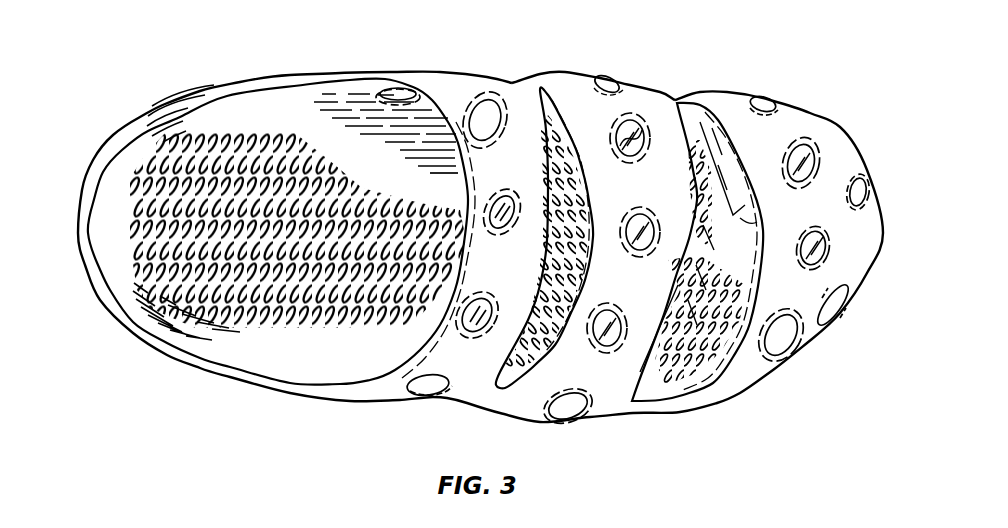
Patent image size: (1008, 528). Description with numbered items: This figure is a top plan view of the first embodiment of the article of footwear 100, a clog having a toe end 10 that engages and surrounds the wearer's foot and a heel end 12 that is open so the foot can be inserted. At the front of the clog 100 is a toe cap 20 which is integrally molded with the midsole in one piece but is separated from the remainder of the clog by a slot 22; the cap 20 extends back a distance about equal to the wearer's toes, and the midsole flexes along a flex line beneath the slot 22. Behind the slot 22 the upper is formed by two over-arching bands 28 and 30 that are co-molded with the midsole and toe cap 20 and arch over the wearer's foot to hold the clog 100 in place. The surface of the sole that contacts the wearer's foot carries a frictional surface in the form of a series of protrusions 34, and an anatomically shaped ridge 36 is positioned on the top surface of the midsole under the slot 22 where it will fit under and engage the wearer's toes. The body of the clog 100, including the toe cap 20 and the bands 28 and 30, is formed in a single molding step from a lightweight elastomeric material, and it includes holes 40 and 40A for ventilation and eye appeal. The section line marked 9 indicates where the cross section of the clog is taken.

The article of footwear 100 is at (657, 72).
The heel end 12 is at (110, 134).
The protrusions 34 is at (228, 162).
The over-arching band 30 is at (442, 92).
The over-arching band 28 is at (558, 82).
The toe cap 20 is at (808, 122).
The toe end 10 is at (804, 343).
The ridge 36 is at (728, 157).
The slot 22 is at (706, 350).
The hole 40 is at (781, 342).
The hole 40A is at (560, 413).
The section line 9- 9 is at (75, 228).